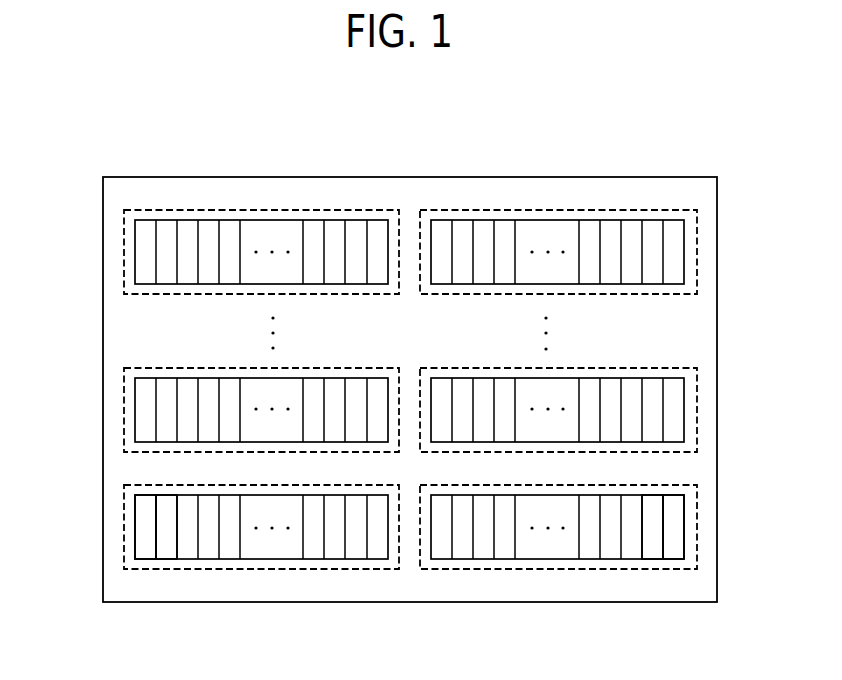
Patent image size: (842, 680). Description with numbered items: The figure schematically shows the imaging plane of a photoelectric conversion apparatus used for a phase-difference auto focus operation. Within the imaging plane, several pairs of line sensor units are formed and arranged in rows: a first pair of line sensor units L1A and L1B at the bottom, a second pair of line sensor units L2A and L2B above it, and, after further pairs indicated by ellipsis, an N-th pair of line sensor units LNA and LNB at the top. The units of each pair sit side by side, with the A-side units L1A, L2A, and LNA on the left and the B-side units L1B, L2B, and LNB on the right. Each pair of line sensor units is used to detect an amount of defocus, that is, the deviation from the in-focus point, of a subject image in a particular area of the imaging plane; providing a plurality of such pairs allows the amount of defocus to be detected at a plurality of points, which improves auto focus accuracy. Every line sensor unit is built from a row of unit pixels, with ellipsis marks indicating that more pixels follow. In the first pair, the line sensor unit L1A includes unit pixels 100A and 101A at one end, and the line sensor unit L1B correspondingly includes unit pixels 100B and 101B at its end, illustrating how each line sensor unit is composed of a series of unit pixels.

The line sensor unit LNA is at (124, 257).
The line sensor unit LNB is at (686, 256).
The line sensor unit L2A is at (124, 412).
The line sensor unit L2B is at (686, 412).
The line sensor unit L1A is at (124, 530).
The line sensor unit L1B is at (686, 529).
The unit pixel 100A is at (146, 559).
The unit pixel 101A is at (168, 559).
The unit pixel 100B is at (675, 559).
The unit pixel 101B is at (653, 559).